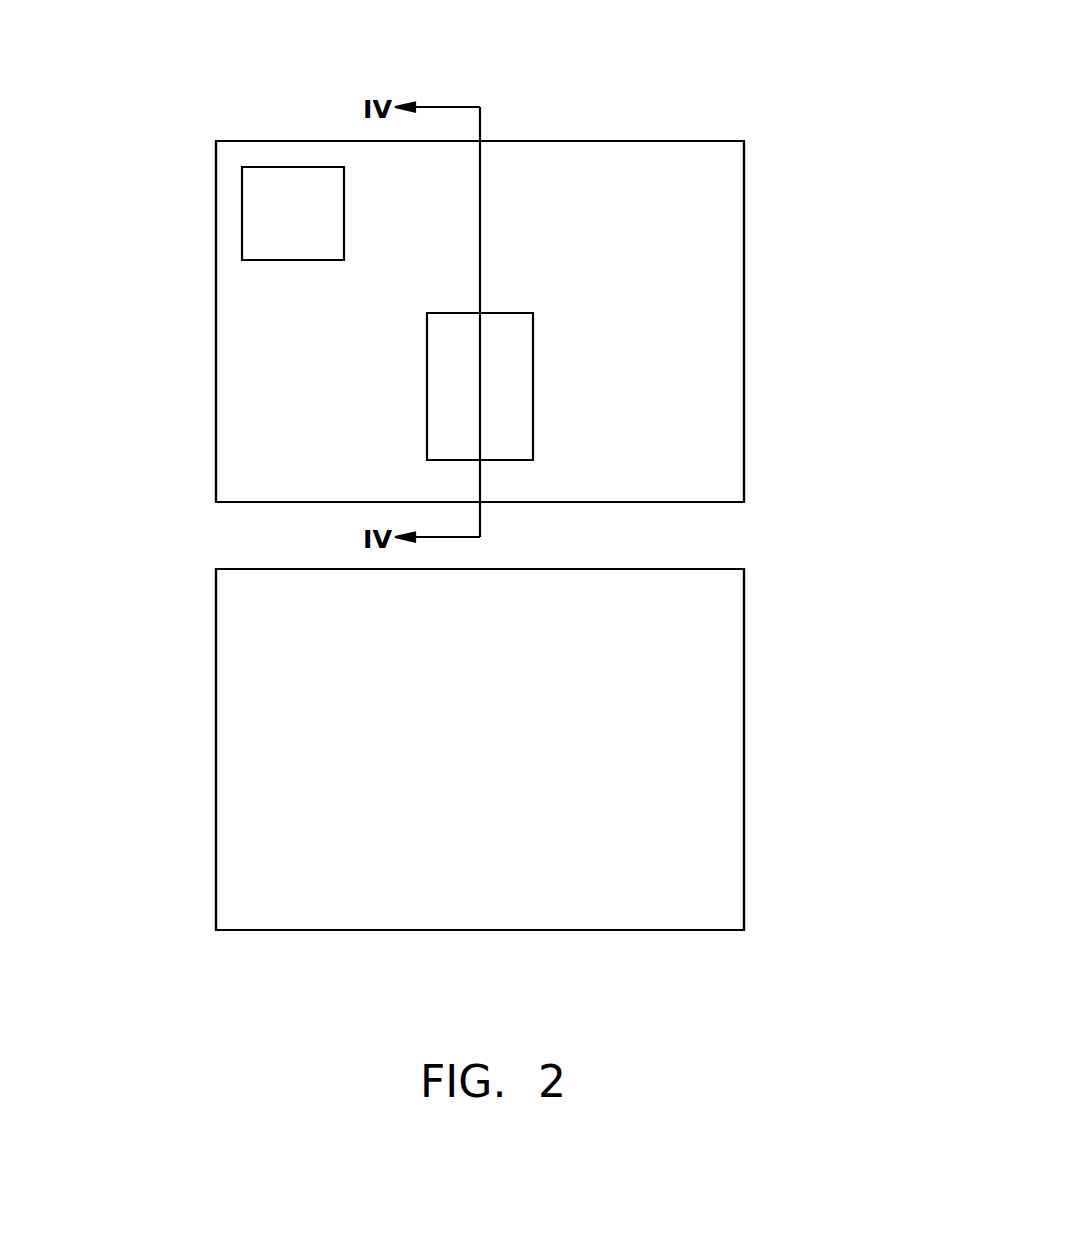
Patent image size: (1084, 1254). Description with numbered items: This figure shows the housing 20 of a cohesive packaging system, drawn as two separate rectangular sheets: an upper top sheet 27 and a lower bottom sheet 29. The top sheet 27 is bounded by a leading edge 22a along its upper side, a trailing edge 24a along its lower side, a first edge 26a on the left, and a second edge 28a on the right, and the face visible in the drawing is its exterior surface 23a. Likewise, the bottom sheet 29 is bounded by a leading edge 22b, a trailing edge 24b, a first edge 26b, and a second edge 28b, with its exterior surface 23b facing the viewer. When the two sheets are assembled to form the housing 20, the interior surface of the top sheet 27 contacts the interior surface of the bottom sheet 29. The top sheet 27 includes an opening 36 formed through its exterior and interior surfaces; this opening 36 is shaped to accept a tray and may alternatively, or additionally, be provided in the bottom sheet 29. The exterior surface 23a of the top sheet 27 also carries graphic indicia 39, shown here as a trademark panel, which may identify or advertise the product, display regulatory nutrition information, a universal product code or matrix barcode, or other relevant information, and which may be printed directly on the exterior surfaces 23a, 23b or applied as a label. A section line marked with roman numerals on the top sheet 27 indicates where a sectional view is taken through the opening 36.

The housing 20 is at (775, 531).
The leading edge 22a is at (672, 141).
The leading edge 22b is at (633, 569).
The exterior surface 23a is at (687, 486).
The exterior surface 23b is at (257, 875).
The trailing edge 24a is at (307, 502).
The trailing edge 24b is at (617, 930).
The first edge 26a is at (216, 398).
The first edge 26b is at (216, 683).
The top sheet 27 is at (262, 293).
The second edge 28a is at (745, 240).
The second edge 28b is at (744, 823).
The bottom sheet 29 is at (252, 753).
The opening 36 is at (508, 313).
The graphic indicia 39 is at (295, 167).